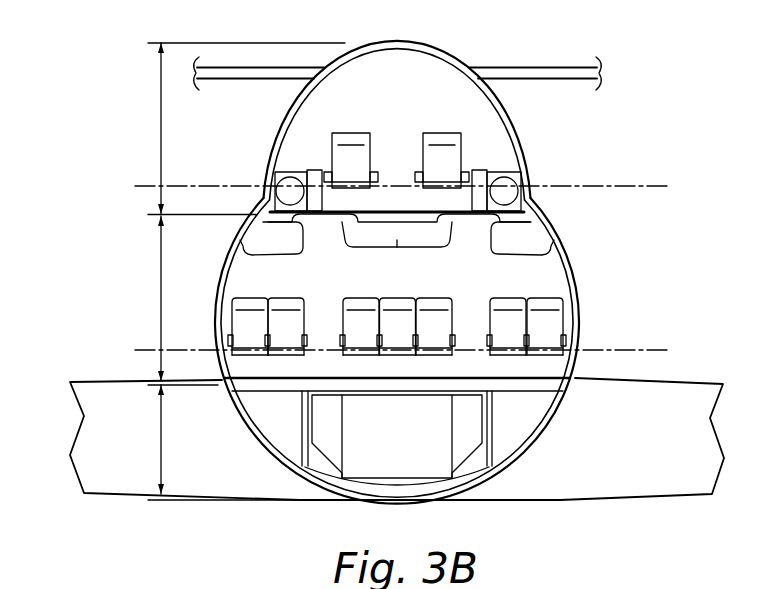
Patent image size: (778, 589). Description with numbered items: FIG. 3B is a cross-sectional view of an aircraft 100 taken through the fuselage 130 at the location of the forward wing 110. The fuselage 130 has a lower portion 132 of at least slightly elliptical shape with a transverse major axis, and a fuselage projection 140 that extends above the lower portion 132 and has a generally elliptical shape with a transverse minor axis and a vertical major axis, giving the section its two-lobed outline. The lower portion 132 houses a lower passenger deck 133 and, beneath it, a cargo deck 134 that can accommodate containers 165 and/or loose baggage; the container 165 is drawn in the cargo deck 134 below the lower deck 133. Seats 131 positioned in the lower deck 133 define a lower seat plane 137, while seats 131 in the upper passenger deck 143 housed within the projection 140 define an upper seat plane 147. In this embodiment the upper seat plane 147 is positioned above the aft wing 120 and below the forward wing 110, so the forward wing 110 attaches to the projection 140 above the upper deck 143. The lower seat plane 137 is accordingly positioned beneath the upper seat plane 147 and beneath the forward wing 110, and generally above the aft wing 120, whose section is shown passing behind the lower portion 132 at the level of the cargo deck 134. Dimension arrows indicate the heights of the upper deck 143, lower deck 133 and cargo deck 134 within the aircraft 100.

The aircraft 100 is at (664, 107).
The forward wing 110 is at (547, 73).
The aft wing 120 is at (98, 382).
The fuselage 130 is at (217, 162).
The seats 131 is at (443, 138).
The lower portion 132 is at (572, 284).
The lower passenger deck 133 is at (161, 296).
The cargo deck 134 is at (161, 448).
The lower seat plane 137 is at (623, 350).
The fuselage projection 140 is at (508, 125).
The upper passenger deck 143 is at (161, 122).
The upper seat plane 147 is at (625, 186).
The containers 165 is at (453, 452).